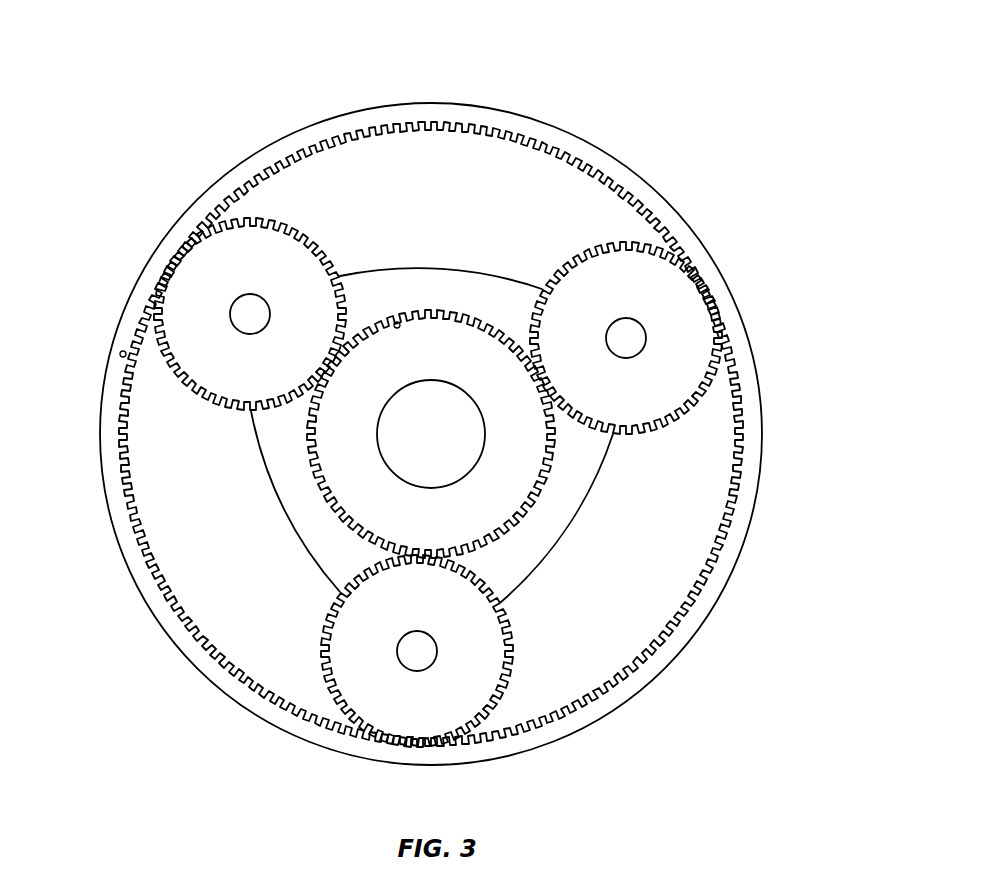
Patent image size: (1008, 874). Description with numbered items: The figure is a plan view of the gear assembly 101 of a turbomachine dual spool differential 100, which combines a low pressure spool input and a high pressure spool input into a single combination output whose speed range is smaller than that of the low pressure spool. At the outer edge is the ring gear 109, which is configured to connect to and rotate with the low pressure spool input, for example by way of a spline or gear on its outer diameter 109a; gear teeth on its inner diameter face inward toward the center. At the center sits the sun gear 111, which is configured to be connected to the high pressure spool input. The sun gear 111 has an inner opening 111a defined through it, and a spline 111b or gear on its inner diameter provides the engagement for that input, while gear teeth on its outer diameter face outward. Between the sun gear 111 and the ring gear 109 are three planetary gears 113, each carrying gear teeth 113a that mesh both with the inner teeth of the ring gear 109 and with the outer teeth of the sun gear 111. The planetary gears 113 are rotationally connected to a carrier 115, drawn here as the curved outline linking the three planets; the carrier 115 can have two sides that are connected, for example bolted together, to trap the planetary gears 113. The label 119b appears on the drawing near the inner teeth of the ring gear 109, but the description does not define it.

The turbomachine dual spool differential 100 is at (197, 83).
The gear assembly 101 is at (792, 540).
The ring gear 109 is at (548, 132).
The outer diameter 109a is at (127, 298).
The sun gear 111 is at (495, 495).
The inner opening 111a is at (422, 438).
The spline 111b is at (487, 447).
The planetary gears 113 is at (573, 262).
The gear teeth 113a is at (283, 228).
The carrier 115 is at (495, 565).
The ring gear teeth 119b is at (153, 562).